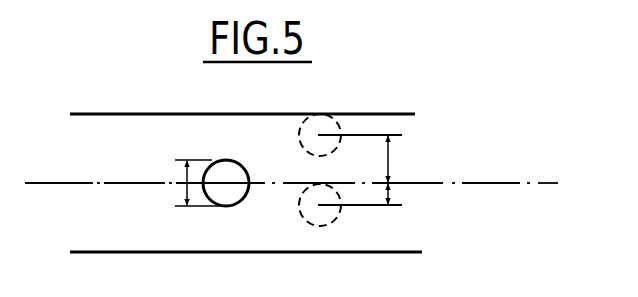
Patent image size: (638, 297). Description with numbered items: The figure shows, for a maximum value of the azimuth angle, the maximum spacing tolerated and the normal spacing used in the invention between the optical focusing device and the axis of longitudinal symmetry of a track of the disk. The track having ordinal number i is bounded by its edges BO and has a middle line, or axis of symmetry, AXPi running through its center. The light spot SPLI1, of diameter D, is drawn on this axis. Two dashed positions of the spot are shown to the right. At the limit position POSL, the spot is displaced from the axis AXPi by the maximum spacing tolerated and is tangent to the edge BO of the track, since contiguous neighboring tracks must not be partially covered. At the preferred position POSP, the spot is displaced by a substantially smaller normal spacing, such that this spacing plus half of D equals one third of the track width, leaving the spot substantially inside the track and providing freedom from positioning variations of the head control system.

The edge of the track BO is at (160, 113).
The axis of symmetry of the track AXPi is at (496, 183).
The light spot SPLI1 is at (226, 206).
The diameter of the light spot D is at (192, 183).
The limit position POSL is at (341, 120).
The preferred position POSP is at (337, 222).